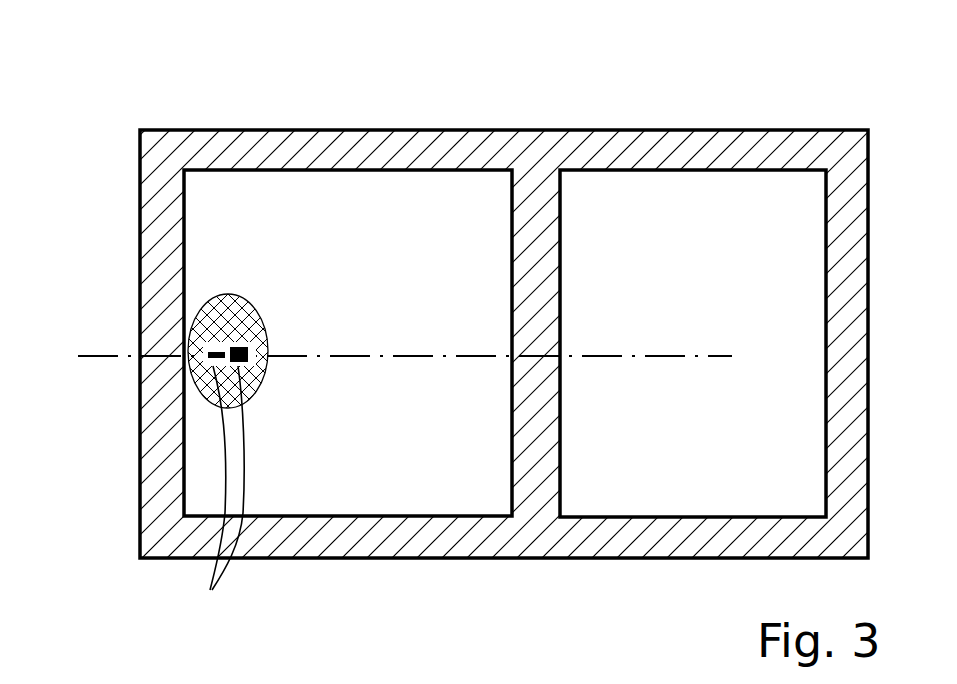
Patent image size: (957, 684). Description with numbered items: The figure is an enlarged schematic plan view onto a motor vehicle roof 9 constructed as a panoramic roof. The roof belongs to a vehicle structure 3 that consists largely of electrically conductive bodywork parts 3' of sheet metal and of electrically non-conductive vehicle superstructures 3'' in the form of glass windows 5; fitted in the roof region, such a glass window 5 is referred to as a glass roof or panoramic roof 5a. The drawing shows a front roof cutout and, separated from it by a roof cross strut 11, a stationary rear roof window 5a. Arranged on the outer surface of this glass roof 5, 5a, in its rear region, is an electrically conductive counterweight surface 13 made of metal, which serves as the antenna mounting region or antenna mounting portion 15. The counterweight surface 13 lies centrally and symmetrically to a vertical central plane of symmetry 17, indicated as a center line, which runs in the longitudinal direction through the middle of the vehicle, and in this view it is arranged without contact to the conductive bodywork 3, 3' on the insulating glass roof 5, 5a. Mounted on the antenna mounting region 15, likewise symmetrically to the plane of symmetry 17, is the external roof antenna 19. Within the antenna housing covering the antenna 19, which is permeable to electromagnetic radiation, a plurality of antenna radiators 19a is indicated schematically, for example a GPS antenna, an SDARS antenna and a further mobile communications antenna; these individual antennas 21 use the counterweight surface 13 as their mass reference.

The motor vehicle roof 9 is at (641, 101).
The vehicle structure 3 is at (478, 322).
The electrically conductive bodywork parts 3' is at (646, 590).
The electrically non-conductive vehicle superstructures 3'' is at (418, 114).
The glass window 5 is at (410, 485).
The panoramic roof 5a is at (348, 343).
The roof cross strut 11 is at (545, 406).
The counterweight surface 13 is at (229, 310).
The antenna mounting region 15 is at (228, 351).
The vertical central plane of symmetry 17 is at (360, 352).
The roof antenna 19 is at (222, 335).
The antenna radiators 19a is at (200, 365).
The individual antennas 21 is at (222, 499).